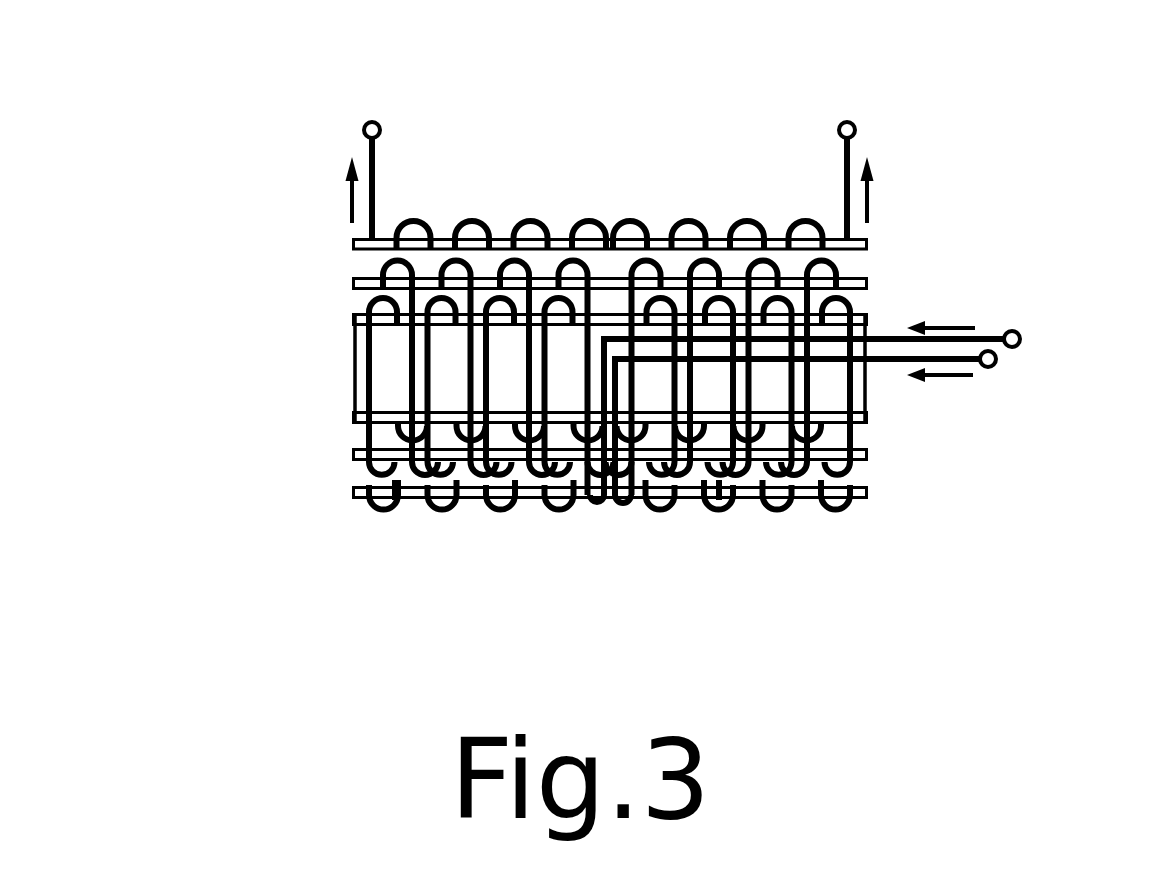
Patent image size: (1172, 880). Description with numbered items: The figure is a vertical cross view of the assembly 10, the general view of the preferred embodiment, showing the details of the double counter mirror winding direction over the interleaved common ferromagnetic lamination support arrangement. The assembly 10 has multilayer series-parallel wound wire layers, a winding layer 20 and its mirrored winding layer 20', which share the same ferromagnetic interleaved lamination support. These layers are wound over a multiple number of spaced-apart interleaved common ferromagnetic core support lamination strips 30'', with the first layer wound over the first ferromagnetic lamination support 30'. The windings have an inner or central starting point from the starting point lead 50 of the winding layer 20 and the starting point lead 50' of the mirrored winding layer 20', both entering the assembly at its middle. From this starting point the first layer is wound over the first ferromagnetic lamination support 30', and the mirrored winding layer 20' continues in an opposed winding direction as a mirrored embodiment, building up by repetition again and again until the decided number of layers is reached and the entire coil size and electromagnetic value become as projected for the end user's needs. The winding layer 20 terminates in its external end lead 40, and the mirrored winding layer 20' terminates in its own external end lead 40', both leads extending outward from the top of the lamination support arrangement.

The assembly 10 is at (638, 359).
The winding layer 20 is at (441, 590).
The mirrored winding layer 20' is at (771, 590).
The first ferromagnetic lamination support 30' is at (507, 337).
The interleaved common ferromagnetic core support lamination strips 30'' is at (503, 485).
The external end lead 40 is at (433, 128).
The external end lead of the mirrored winding layer 40' is at (914, 138).
The starting point lead 50 is at (870, 380).
The starting point lead of the mirrored winding 50' is at (854, 423).